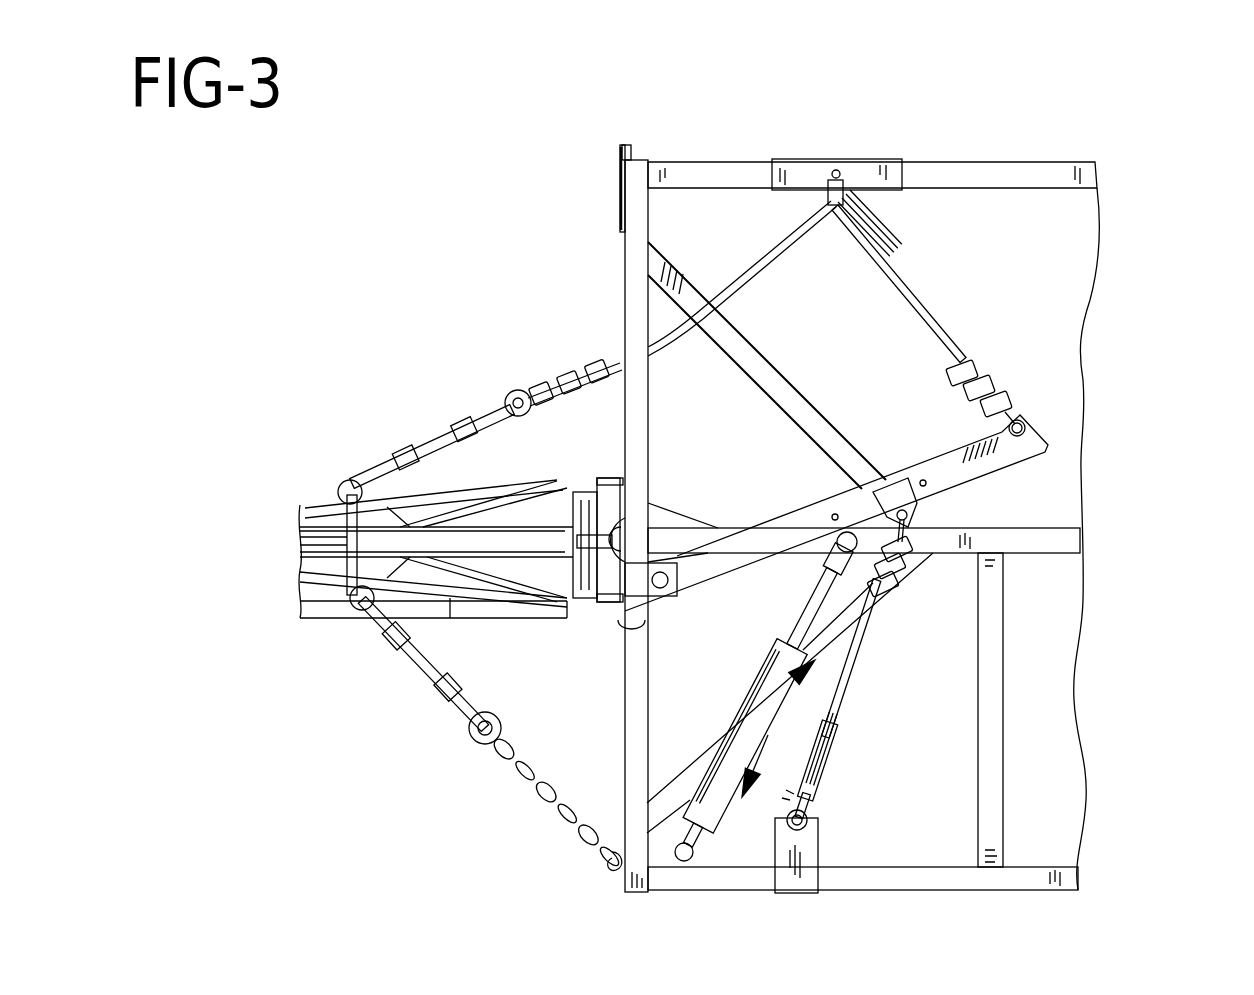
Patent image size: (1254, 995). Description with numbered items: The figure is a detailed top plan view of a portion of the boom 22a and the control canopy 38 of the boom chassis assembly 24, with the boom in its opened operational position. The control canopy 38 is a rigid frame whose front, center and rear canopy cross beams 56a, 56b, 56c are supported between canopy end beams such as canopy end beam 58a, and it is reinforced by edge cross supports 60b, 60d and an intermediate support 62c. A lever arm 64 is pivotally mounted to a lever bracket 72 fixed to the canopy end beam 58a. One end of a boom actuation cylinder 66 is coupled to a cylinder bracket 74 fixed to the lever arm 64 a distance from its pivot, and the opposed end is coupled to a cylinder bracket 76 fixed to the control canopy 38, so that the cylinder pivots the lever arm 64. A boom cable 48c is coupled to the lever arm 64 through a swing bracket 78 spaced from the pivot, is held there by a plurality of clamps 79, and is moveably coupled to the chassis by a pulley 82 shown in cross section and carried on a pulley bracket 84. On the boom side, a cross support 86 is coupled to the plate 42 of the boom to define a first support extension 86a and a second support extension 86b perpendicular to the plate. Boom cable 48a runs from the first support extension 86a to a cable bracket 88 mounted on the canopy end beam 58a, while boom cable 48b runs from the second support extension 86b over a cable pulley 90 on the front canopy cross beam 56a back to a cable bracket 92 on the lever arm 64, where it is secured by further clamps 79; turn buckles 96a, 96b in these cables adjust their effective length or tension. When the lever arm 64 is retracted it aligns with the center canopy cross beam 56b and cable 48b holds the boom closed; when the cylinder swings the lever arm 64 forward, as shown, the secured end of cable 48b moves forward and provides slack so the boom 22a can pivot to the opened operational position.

The boom chassis assembly 24 is at (1068, 137).
The control canopy 38 is at (1128, 187).
The front canopy cross beam 56a is at (985, 160).
The center canopy cross beam 56b is at (1033, 529).
The rear canopy cross beam 56c is at (1038, 866).
The intermediate support 62c is at (1005, 688).
The canopy end beam 58a is at (625, 262).
The cable pulley 90 is at (883, 222).
The boom cable 48b is at (920, 302).
The boom cable 48c is at (860, 745).
The boom cable 48a is at (545, 780).
The edge cross support 60b is at (805, 360).
The edge cross support 60d is at (882, 630).
The clamps 79 is at (1000, 372).
The lever arm 64 is at (841, 492).
The cable bracket 92 is at (1040, 440).
The swing bracket 78 is at (912, 500).
The cylinder bracket 74 is at (833, 555).
The lever bracket 72 is at (652, 600).
The boom actuation cylinder 66 is at (750, 690).
The cylinder bracket 76 is at (705, 840).
The pulley 82 is at (832, 768).
The pulley bracket 84 is at (820, 845).
The plate 42 is at (485, 530).
The boom 22a is at (312, 492).
The cross support 86 is at (352, 562).
The first support extension 86a is at (345, 605).
The second support extension 86b is at (345, 480).
The turn buckle 96a is at (420, 665).
The turn buckle 96b is at (437, 428).
The cable bracket 88 is at (605, 862).